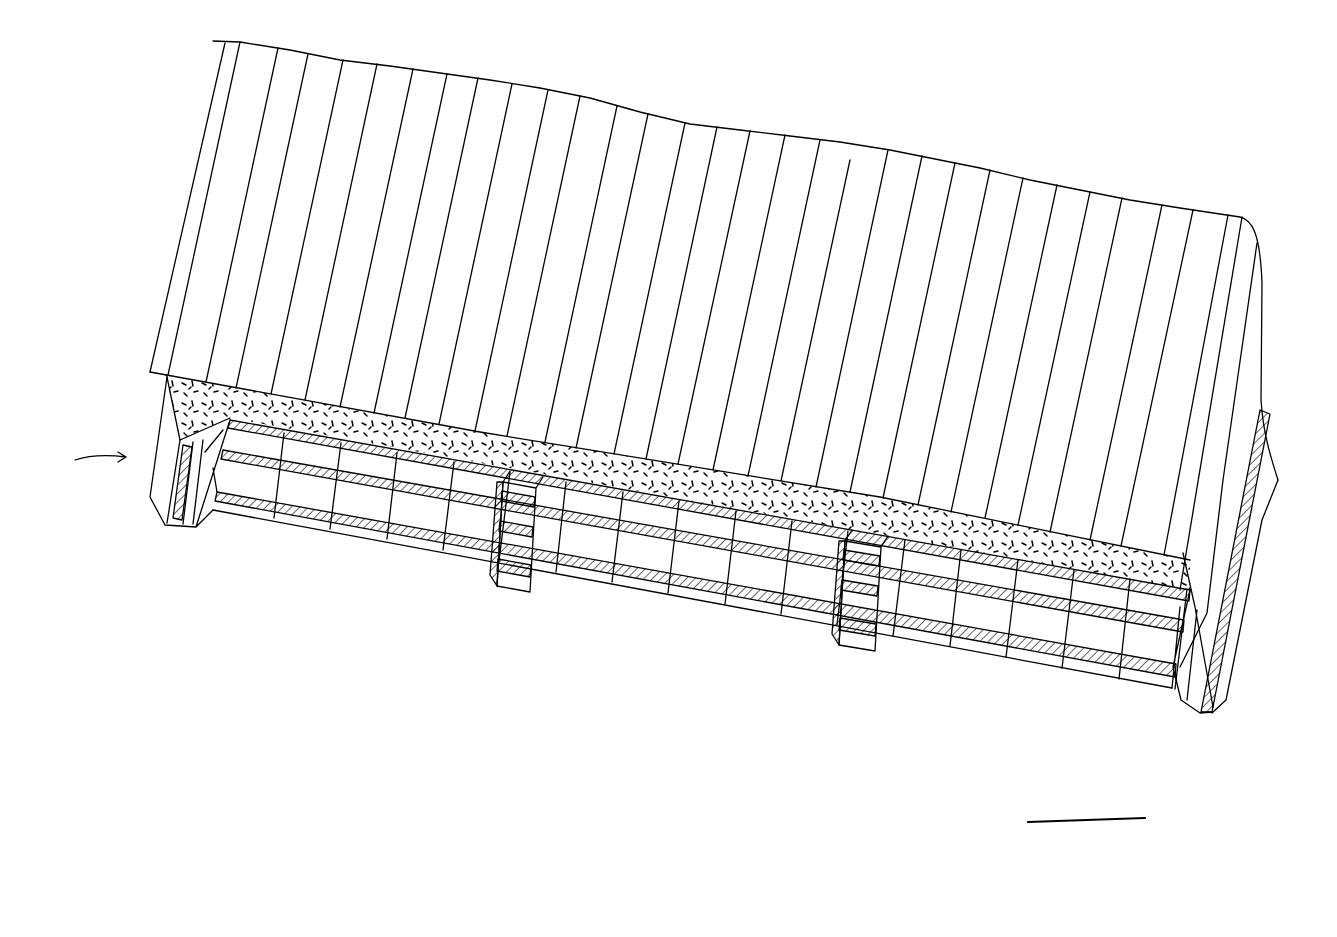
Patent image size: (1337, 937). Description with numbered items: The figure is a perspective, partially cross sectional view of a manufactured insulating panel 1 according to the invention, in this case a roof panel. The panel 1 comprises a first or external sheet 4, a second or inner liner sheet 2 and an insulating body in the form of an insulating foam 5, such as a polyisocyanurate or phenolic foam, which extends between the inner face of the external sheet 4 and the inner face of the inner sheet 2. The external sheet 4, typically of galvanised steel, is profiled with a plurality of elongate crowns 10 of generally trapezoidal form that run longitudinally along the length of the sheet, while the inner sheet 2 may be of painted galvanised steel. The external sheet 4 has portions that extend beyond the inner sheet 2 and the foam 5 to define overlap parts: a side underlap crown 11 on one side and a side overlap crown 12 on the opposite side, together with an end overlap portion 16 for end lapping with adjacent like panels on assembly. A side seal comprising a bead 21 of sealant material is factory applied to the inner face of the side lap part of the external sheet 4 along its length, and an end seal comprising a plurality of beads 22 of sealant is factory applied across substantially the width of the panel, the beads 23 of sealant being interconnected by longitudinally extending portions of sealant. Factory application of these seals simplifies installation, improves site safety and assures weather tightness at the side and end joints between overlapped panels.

The insulating panel 1 is at (1200, 98).
The inner sheet 2 is at (838, 143).
The external sheet 4 is at (747, 610).
The insulating foam 5 is at (423, 438).
The elongate crowns 10 is at (517, 590).
The side underlap crown 11 is at (183, 523).
The side overlap crown 12 is at (1193, 713).
The end overlap portion 16 is at (94, 478).
The bead of sealant material 21 is at (1243, 570).
The beads of sealant material 22 is at (660, 515).
The beads of sealant 23 is at (182, 478).